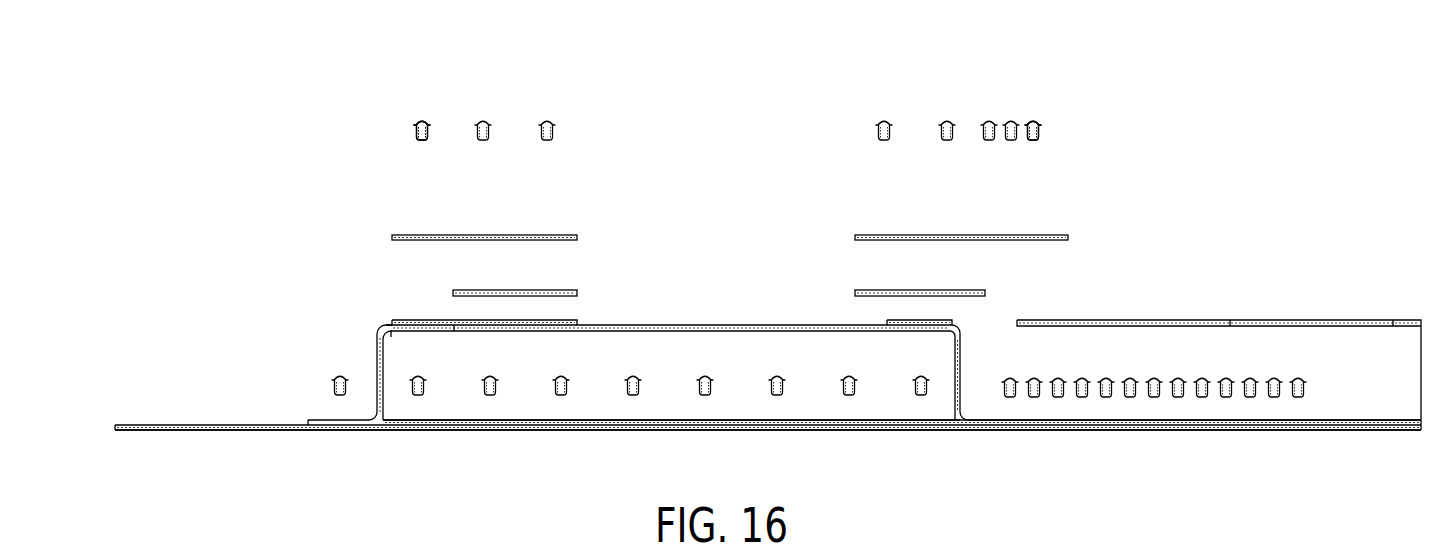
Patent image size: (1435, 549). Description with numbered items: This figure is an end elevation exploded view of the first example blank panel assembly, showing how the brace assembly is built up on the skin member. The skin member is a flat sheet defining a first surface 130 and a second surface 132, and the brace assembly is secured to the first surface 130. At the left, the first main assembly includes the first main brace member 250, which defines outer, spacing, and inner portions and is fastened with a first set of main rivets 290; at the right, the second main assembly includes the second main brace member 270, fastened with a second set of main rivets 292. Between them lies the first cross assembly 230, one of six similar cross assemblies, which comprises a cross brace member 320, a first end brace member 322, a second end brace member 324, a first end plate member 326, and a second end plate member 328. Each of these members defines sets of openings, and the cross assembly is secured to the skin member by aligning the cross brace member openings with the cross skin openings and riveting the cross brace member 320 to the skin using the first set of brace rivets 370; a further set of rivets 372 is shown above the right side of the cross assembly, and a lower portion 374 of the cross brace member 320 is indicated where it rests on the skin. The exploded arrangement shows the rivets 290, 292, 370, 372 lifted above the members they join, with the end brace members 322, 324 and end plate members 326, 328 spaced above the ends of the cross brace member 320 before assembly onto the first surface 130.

The first surface 130 is at (205, 421).
The second surface 132 is at (248, 430).
The first cross assembly 230 is at (771, 95).
The first main brace member 250 is at (380, 387).
The second main brace member 270 is at (1177, 345).
The first set of main rivets 290 is at (398, 112).
The second set of main rivets 292 is at (1058, 104).
The cross brace member 320 is at (682, 345).
The first end brace member 322 is at (392, 237).
The second end brace member 324 is at (1068, 238).
The first end plate member 326 is at (453, 293).
The second end plate member 328 is at (985, 293).
The first set of brace rivets 370 is at (523, 98).
The fastener set 372 is at (925, 93).
The tray floor 374 is at (677, 420).